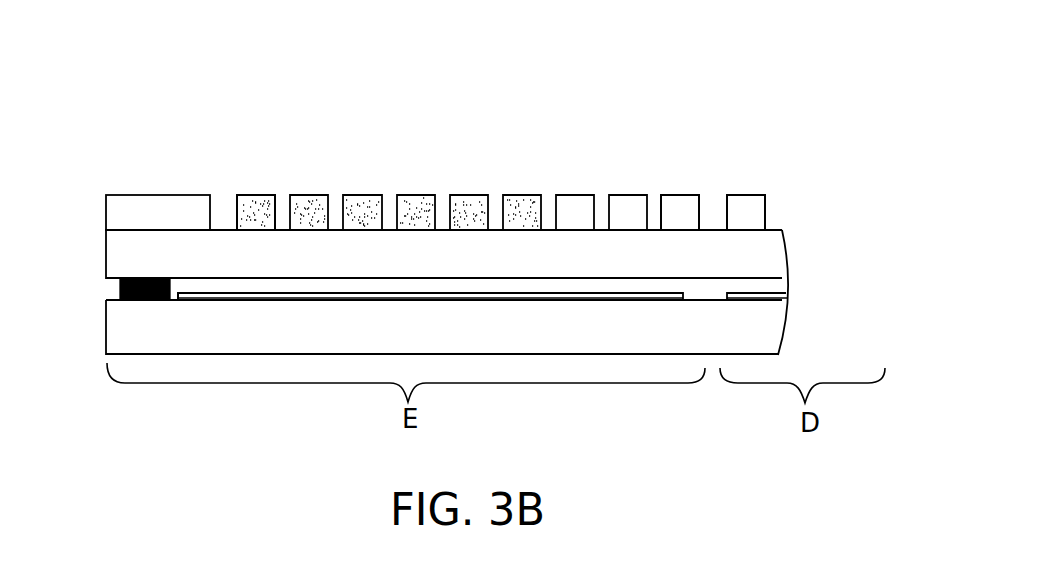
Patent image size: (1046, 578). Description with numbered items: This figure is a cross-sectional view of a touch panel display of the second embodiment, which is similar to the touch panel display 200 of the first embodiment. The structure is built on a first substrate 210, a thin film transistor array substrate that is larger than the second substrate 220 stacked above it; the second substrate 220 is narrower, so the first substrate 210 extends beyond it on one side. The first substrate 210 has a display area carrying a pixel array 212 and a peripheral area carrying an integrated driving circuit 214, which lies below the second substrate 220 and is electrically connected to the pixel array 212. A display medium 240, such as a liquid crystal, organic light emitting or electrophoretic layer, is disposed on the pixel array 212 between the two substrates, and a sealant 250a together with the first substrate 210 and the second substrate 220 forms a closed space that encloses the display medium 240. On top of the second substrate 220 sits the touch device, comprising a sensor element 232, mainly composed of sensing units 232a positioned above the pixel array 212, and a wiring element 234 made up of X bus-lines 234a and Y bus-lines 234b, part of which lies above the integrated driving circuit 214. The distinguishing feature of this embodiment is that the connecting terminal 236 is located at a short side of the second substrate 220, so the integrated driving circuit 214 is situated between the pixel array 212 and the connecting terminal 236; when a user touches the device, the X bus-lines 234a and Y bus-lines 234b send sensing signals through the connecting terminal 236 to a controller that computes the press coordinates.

The touch panel display 200 is at (872, 497).
The first substrate 210 is at (775, 330).
The pixel array 212 is at (775, 298).
The integrated driving circuit 214 is at (185, 297).
The second substrate 220 is at (775, 253).
The sensor element 232 is at (887, 167).
The sensing units 232a is at (758, 212).
The wiring element 234 is at (598, 137).
The X bus-lines 234a is at (253, 200).
The Y bus-lines 234b is at (582, 195).
The connecting terminal 236 is at (827, 102).
The display medium 240 is at (775, 285).
The sealant 250a is at (120, 287).